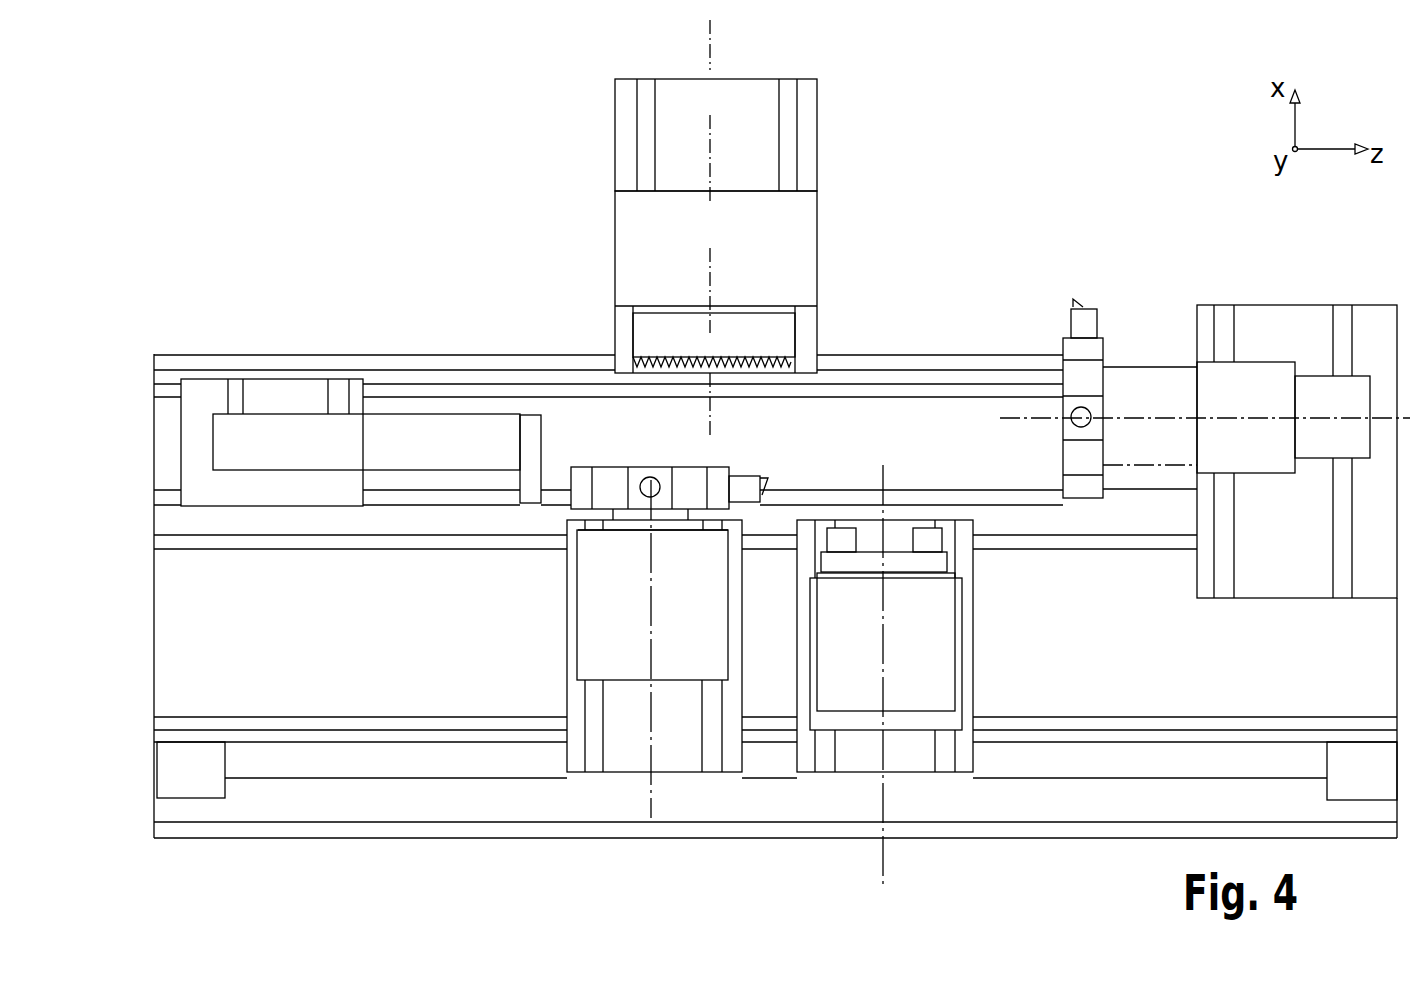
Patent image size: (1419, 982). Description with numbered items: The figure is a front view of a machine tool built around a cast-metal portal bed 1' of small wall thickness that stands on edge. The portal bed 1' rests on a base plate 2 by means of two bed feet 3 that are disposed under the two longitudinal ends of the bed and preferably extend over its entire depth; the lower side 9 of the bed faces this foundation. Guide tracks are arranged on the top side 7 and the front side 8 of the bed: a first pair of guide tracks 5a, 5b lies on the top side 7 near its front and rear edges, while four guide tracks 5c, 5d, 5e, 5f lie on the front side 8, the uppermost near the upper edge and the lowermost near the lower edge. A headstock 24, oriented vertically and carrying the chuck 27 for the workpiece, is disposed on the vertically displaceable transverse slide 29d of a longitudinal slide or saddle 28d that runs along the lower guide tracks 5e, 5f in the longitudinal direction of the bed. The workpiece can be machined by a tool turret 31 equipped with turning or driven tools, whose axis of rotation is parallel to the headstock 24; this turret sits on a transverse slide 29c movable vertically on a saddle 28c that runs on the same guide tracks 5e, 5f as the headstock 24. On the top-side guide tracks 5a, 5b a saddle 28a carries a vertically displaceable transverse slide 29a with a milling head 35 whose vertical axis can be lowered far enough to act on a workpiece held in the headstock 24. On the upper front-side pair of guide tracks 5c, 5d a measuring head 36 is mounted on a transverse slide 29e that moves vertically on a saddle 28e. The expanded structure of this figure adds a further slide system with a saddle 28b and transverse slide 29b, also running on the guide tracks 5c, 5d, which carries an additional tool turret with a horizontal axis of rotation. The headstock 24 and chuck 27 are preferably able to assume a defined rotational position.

The portal bed 1' is at (1106, 639).
The base plate 2 is at (615, 827).
The bed feet 3 is at (777, 771).
The guide track 5a is at (872, 363).
The guide track 5b is at (608, 390).
The guide track 5c is at (921, 399).
The guide track 5d is at (932, 495).
The guide track 5e is at (287, 541).
The guide track 5f is at (285, 717).
The top side 7 is at (467, 323).
The front side 8 is at (675, 581).
The lower side 9 is at (493, 740).
The headstock 24 is at (886, 642).
The chuck 27 is at (942, 563).
The longitudinal slide or saddle 28a is at (716, 111).
The longitudinal slide or saddle 28b is at (1297, 451).
The longitudinal slide or saddle 28c is at (654, 649).
The longitudinal slide or saddle 28d is at (885, 676).
The longitudinal slide or saddle 28e is at (272, 442).
The transverse slide 29a is at (716, 313).
The transverse slide 29b is at (1205, 425).
The transverse slide 29c is at (652, 605).
The transverse slide 29d is at (886, 654).
The transverse slide 29e is at (366, 442).
The tool turret 31 is at (1133, 308).
The milling head 35 is at (714, 340).
The measuring head 36 is at (537, 443).